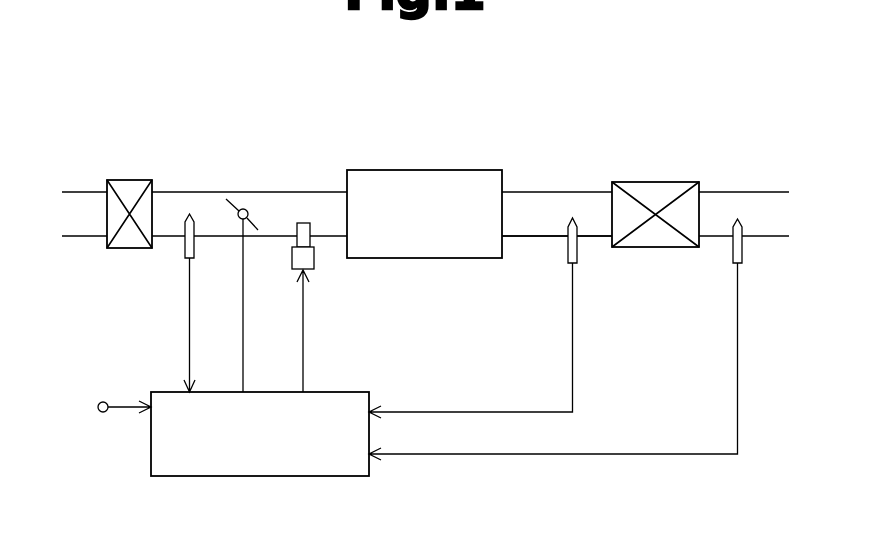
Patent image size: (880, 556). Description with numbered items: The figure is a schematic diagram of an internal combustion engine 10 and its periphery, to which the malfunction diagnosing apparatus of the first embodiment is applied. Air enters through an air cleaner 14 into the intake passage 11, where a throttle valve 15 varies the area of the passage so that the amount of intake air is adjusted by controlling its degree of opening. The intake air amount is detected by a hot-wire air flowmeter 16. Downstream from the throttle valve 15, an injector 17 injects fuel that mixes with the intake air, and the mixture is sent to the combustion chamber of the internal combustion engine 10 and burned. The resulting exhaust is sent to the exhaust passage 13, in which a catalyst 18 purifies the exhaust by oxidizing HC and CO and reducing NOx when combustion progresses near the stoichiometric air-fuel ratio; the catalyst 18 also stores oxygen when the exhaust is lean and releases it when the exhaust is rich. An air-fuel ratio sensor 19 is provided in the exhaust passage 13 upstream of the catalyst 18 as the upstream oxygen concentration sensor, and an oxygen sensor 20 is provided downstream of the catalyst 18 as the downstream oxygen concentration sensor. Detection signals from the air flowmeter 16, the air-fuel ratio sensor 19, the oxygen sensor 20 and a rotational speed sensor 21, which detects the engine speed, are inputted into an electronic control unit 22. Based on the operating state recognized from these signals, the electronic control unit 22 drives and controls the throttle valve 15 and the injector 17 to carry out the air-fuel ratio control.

The internal combustion engine 10 is at (380, 170).
The intake passage 11 is at (297, 190).
The exhaust passage 13 is at (520, 238).
The air cleaner 14 is at (125, 250).
The throttle valve 15 is at (236, 198).
The hot-wire air flowmeter 16 is at (184, 250).
The injector 17 is at (315, 260).
The catalyst 18 is at (652, 182).
The air-fuel ratio sensor 19 is at (578, 254).
The oxygen sensor 20 is at (744, 250).
The rotational speed sensor 21 is at (98, 407).
The electronic control unit 22 is at (151, 455).